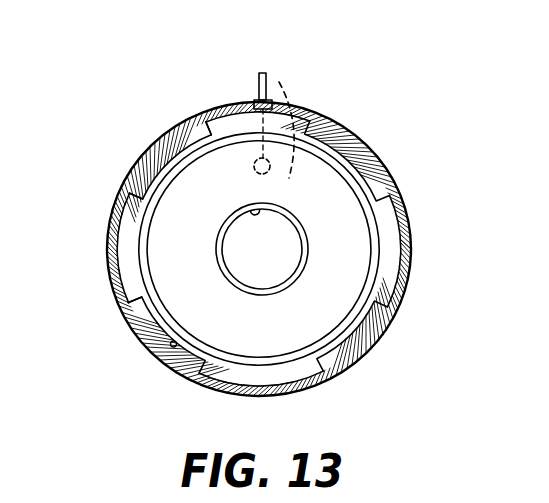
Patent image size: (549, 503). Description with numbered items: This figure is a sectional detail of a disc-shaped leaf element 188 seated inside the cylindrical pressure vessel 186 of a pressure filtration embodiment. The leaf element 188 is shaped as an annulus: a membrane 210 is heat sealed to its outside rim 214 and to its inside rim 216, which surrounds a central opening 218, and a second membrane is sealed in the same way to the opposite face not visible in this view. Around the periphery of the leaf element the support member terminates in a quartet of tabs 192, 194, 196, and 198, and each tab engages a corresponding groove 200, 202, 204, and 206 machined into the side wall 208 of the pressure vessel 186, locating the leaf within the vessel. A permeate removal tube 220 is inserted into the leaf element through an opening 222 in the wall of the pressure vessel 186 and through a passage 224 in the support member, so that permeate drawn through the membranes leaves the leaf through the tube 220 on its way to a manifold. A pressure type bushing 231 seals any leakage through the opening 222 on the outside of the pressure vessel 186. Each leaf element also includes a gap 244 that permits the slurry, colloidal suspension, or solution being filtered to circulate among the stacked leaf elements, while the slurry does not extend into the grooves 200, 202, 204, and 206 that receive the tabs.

The cylindrical pressure vessel 186 is at (408, 293).
The disc-shaped leaf element 188 is at (397, 168).
The tab 192 is at (395, 208).
The tab 194 is at (293, 376).
The tab 196 is at (126, 273).
The tab 198 is at (211, 117).
The groove 200 is at (405, 243).
The groove 202 is at (232, 396).
The groove 204 is at (108, 239).
The groove 206 is at (316, 120).
The side wall 208 is at (170, 345).
The membrane 210 is at (155, 187).
The outside rim 214 is at (170, 160).
The inside rim 216 is at (289, 221).
The opening 218 is at (253, 216).
The permeate removal tube 220 is at (270, 99).
The opening 222 is at (300, 93).
The passage 224 is at (269, 171).
The pressure type bushing 231 is at (257, 101).
The gap 244 is at (148, 313).